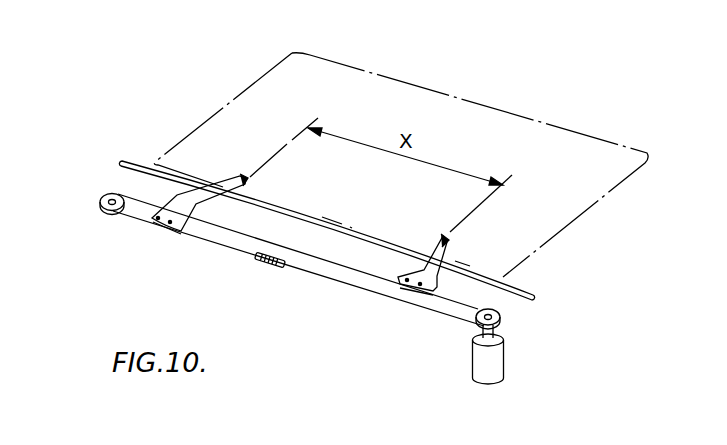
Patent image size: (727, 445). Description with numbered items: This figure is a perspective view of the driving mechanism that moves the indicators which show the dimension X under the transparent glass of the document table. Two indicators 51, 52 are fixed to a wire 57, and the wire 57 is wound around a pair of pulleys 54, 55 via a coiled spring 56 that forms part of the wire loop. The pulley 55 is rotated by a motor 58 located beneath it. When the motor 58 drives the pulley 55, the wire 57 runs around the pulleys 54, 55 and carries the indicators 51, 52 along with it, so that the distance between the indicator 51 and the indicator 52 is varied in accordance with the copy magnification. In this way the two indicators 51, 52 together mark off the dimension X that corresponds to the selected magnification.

The indicator 51 is at (173, 226).
The indicator 52 is at (411, 293).
The pulley 54 is at (102, 197).
The pulley 55 is at (501, 319).
The coiled spring 56 is at (264, 270).
The wire 57 is at (343, 282).
The motor 58 is at (504, 366).